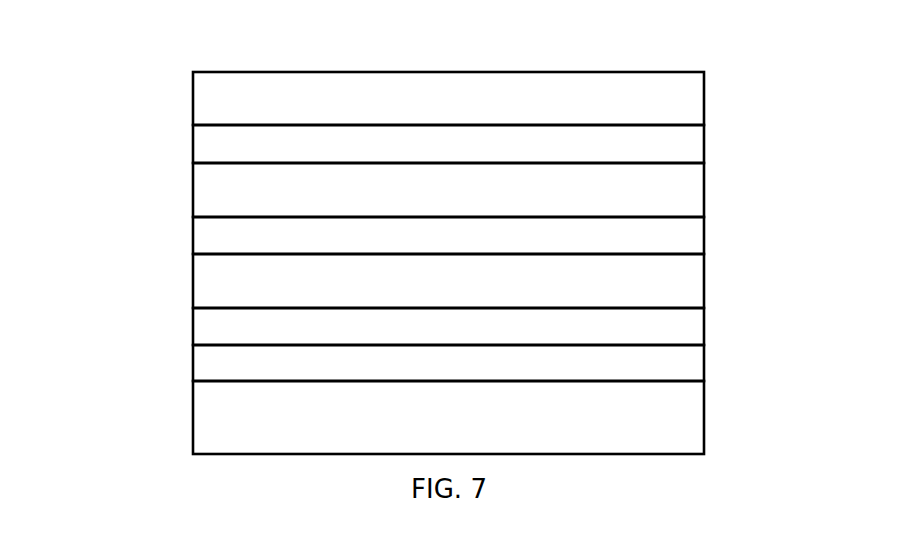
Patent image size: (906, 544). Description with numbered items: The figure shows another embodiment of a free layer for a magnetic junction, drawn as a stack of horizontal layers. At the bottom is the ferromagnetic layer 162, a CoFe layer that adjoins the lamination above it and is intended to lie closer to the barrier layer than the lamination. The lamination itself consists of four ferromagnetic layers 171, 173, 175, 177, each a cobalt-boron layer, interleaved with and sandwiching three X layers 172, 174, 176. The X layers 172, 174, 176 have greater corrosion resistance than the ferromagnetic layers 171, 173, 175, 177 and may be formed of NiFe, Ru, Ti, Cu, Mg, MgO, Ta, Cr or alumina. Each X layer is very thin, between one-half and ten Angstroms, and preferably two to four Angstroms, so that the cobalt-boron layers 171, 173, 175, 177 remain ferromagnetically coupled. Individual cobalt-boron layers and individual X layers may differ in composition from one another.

The ferromagnetic layer 177 is at (193, 91).
The X layer 176 is at (704, 140).
The ferromagnetic layer 175 is at (193, 181).
The X layer 174 is at (704, 232).
The ferromagnetic layer 173 is at (193, 272).
The X layer 172 is at (704, 322).
The ferromagnetic layer 171 is at (193, 364).
The ferromagnetic layer 162 is at (704, 405).